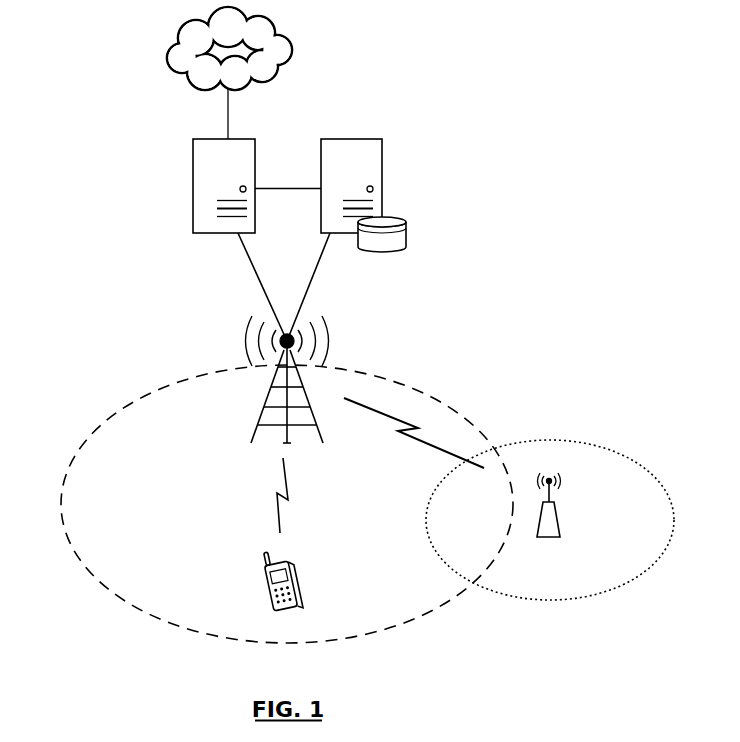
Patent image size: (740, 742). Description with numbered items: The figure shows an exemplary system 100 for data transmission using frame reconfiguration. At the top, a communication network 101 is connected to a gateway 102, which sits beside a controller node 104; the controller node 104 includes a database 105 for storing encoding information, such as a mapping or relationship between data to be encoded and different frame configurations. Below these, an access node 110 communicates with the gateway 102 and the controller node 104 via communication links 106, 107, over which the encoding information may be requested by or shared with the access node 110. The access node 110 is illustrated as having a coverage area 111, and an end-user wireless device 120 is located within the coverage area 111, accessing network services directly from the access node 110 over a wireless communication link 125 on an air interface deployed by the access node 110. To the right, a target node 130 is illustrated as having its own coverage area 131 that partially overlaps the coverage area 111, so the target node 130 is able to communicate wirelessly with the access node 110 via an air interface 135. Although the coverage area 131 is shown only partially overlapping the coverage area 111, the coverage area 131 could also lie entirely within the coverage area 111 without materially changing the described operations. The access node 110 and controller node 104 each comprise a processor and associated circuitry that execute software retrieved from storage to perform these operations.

The system 100 is at (341, 71).
The communication network 101 is at (209, 62).
The gateway 102 is at (193, 158).
The controller node 104 is at (382, 152).
The database 105 is at (407, 223).
The communication link 106 is at (253, 268).
The communication link 107 is at (311, 268).
The access node 110 is at (265, 427).
The coverage area 111 is at (130, 607).
The end-user wireless device 120 is at (300, 580).
The wireless communication link 125 is at (275, 505).
The target node 130 is at (565, 528).
The coverage area 131 is at (571, 600).
The air interface 135 is at (410, 443).